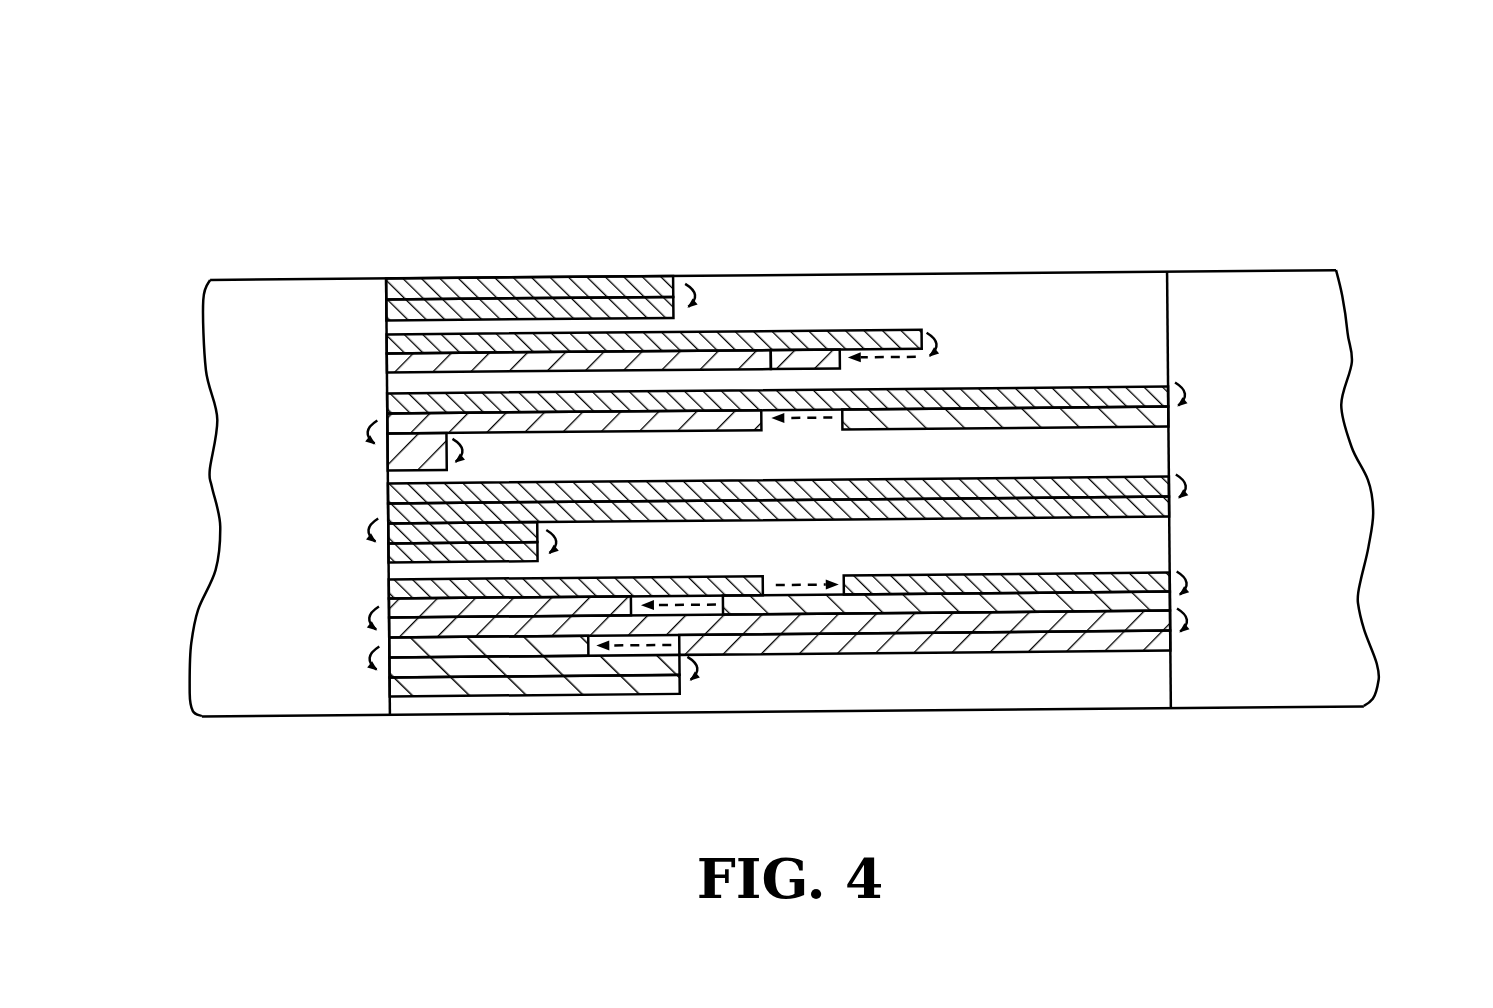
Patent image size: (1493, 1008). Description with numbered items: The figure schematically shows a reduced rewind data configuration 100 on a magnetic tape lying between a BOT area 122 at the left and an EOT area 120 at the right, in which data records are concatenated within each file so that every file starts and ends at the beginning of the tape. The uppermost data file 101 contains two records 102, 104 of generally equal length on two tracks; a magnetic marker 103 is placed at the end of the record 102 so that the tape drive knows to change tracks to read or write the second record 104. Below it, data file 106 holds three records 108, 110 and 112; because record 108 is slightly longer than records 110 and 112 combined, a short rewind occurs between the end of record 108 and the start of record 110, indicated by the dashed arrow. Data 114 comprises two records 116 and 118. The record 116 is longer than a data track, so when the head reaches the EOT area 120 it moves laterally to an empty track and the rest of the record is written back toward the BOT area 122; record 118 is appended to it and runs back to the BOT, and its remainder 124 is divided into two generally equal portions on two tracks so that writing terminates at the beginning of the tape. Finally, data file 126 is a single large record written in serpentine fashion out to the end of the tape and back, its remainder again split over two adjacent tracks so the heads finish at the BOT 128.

The reduced rewind data configuration 100 is at (1162, 96).
The data file 101 is at (473, 265).
The record 102 is at (386, 295).
The magnetic marker 103 is at (697, 275).
The record 104 is at (386, 305).
The data file 106 is at (866, 328).
The record 108 is at (906, 331).
The record 110 is at (800, 332).
The record 112 is at (387, 357).
The data 114 is at (1137, 382).
The record 116 is at (387, 395).
The record 118 is at (368, 418).
The EOT area 120 is at (1313, 610).
The BOT area 122 is at (212, 633).
The remainder 124 is at (387, 444).
The data file 126 is at (1150, 481).
The BOT 128 is at (387, 547).